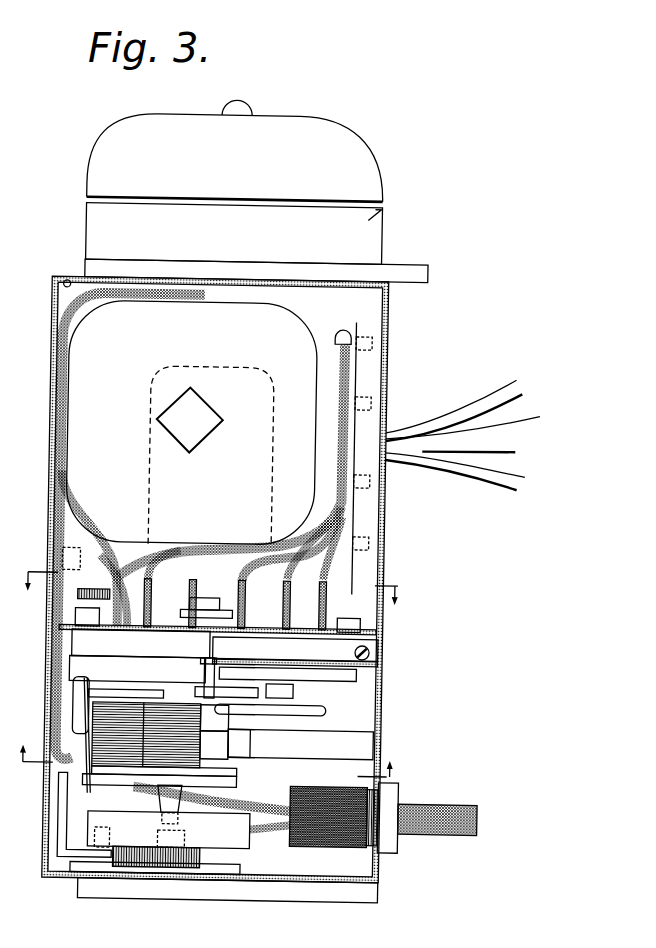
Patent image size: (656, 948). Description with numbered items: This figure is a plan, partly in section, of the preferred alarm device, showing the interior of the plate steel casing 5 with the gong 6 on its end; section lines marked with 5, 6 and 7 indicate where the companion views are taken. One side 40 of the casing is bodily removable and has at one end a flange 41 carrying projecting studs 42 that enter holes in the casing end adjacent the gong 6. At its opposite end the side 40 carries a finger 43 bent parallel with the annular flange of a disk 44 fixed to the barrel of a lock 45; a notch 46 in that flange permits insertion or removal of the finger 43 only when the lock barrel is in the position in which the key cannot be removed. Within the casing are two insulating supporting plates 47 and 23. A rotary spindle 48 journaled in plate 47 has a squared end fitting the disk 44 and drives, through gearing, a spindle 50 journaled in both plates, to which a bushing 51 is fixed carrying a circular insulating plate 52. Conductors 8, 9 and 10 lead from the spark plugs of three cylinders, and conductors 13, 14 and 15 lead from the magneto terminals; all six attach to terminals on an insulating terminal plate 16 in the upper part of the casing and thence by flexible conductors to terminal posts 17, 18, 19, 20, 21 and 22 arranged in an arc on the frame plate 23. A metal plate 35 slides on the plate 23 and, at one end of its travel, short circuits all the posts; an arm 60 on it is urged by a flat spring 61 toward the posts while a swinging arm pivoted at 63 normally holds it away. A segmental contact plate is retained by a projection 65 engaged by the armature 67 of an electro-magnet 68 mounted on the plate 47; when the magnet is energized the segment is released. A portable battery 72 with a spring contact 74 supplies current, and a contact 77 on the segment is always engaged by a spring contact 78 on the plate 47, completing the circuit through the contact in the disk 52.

The box or casing 5 is at (205, 656).
The gong 6 is at (27, 698).
The section line 7- 7 is at (211, 573).
The conductor 8 is at (357, 565).
The conductor 9 is at (297, 533).
The conductor 10 is at (187, 556).
The conductor 13 is at (472, 399).
The conductor 14 is at (531, 434).
The conductor 15 is at (503, 487).
The insulating terminal plate 16 is at (355, 449).
The terminal post 17 is at (88, 602).
The terminal post 18 is at (159, 603).
The terminal post 19 is at (206, 603).
The terminal post 20 is at (246, 600).
The terminal post 21 is at (291, 600).
The terminal post 22 is at (327, 599).
The frame plate 23 is at (217, 642).
The metal plate 35 is at (132, 627).
The removable side 40 is at (56, 514).
The flange 41 is at (66, 278).
The projecting studs or pins 42 is at (72, 293).
The finger 43 is at (84, 814).
The disk 44 is at (222, 846).
The lock 45 is at (168, 864).
The notch 46 is at (189, 839).
The supporting plate 47 is at (300, 744).
The rotary spindle 48 is at (212, 808).
The spindle 50 is at (159, 745).
The circular plate or bushing 51 is at (252, 743).
The circular plate of insulating material 52 is at (270, 709).
The arm 60 is at (209, 662).
The flat spring 61 is at (295, 652).
The pivot 63 is at (137, 668).
The projection 65 is at (125, 697).
The armature 67 is at (125, 690).
The electro-magnet 68 is at (214, 732).
The battery 72 is at (76, 379).
The spring contact 74 is at (211, 456).
The contact 77 is at (296, 686).
The spring contact 78 is at (285, 694).